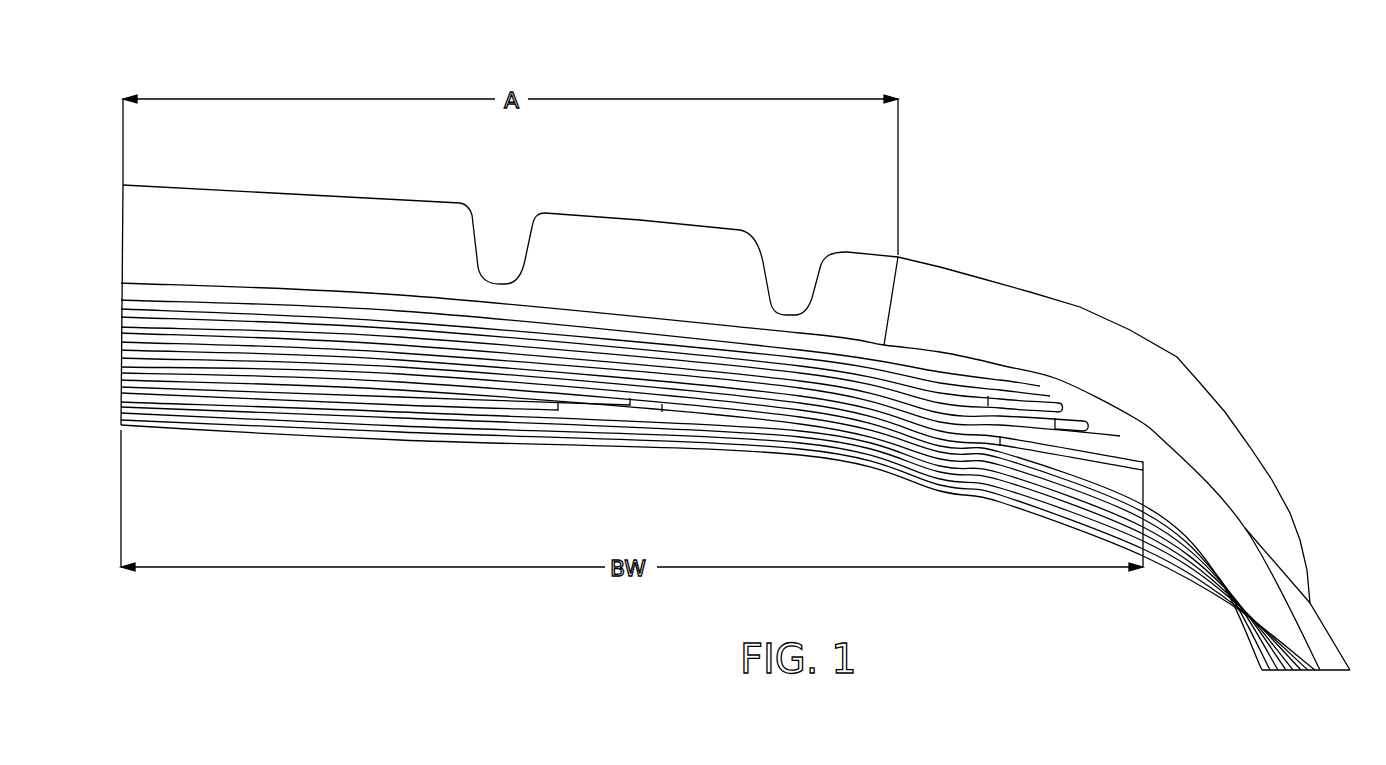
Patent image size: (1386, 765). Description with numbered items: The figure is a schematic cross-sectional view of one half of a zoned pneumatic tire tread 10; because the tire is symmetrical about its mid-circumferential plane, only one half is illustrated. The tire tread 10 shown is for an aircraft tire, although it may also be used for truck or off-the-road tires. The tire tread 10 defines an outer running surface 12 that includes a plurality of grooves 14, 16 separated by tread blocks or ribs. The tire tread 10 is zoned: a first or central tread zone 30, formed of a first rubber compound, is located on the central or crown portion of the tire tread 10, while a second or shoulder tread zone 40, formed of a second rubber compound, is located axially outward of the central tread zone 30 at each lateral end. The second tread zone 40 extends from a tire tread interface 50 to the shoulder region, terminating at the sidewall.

The tire tread 10 is at (1050, 156).
The outer running surface 12 is at (698, 246).
The groove 14 is at (506, 222).
The groove 16 is at (786, 303).
The first or central tread zone 30 is at (372, 192).
The second or shoulder tread zone 40 is at (1084, 319).
The tire tread interface 50 is at (905, 269).